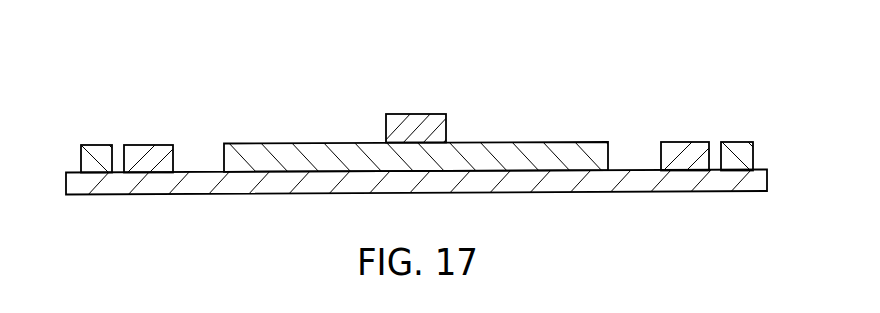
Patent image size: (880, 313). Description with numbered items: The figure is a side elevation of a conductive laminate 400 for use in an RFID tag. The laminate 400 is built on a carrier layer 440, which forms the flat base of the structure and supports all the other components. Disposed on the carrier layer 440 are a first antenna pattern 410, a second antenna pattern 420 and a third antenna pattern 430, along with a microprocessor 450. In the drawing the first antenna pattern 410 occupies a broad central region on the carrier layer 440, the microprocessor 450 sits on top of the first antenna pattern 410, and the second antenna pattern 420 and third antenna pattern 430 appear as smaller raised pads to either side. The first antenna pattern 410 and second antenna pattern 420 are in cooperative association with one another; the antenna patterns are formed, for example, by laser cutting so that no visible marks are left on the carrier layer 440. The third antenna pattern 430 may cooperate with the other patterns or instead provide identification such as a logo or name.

The semiconductor device assembly 400 is at (610, 56).
The first antenna pattern 410 is at (560, 146).
The second antenna pattern 420 is at (147, 149).
The third antenna pattern 430 is at (97, 149).
The carrier layer 440 is at (678, 186).
The microprocessor 450 is at (415, 118).